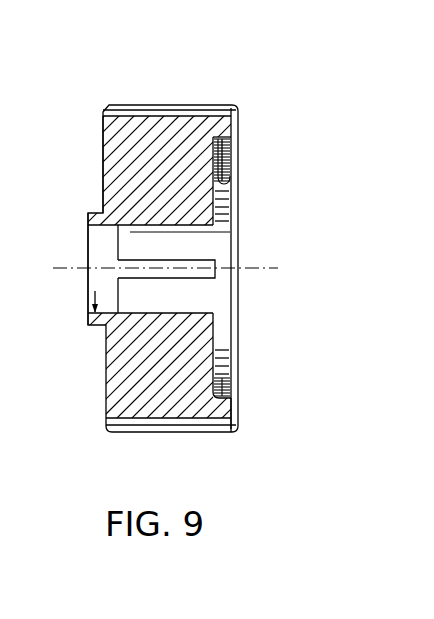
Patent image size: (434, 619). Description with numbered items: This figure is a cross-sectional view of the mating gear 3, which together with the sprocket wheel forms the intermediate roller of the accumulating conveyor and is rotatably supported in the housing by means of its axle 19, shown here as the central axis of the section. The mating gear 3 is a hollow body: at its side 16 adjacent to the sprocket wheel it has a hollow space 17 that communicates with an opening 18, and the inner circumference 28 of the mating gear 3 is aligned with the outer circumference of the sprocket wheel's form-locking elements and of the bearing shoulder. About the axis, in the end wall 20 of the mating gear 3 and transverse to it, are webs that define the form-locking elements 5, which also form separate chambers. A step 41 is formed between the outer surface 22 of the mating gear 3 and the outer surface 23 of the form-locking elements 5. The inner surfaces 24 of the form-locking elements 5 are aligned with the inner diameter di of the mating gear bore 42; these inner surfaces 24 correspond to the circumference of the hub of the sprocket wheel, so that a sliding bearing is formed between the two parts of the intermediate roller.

The mating gear 3 is at (258, 96).
The form-locking elements 5 is at (162, 130).
The side 16 is at (240, 121).
The hollow space 17 is at (233, 167).
The opening 18 is at (259, 160).
The inner circumference 28 is at (238, 186).
The end wall 20 is at (103, 168).
The inner surfaces 24 is at (118, 229).
The axle 19 is at (268, 268).
The mating gear bore 42 is at (89, 278).
The inner diameter di is at (93, 297).
The outer surface of the form-locking elements 23 is at (223, 347).
The step 41 is at (225, 389).
The outer surface of the mating gear 22 is at (237, 411).